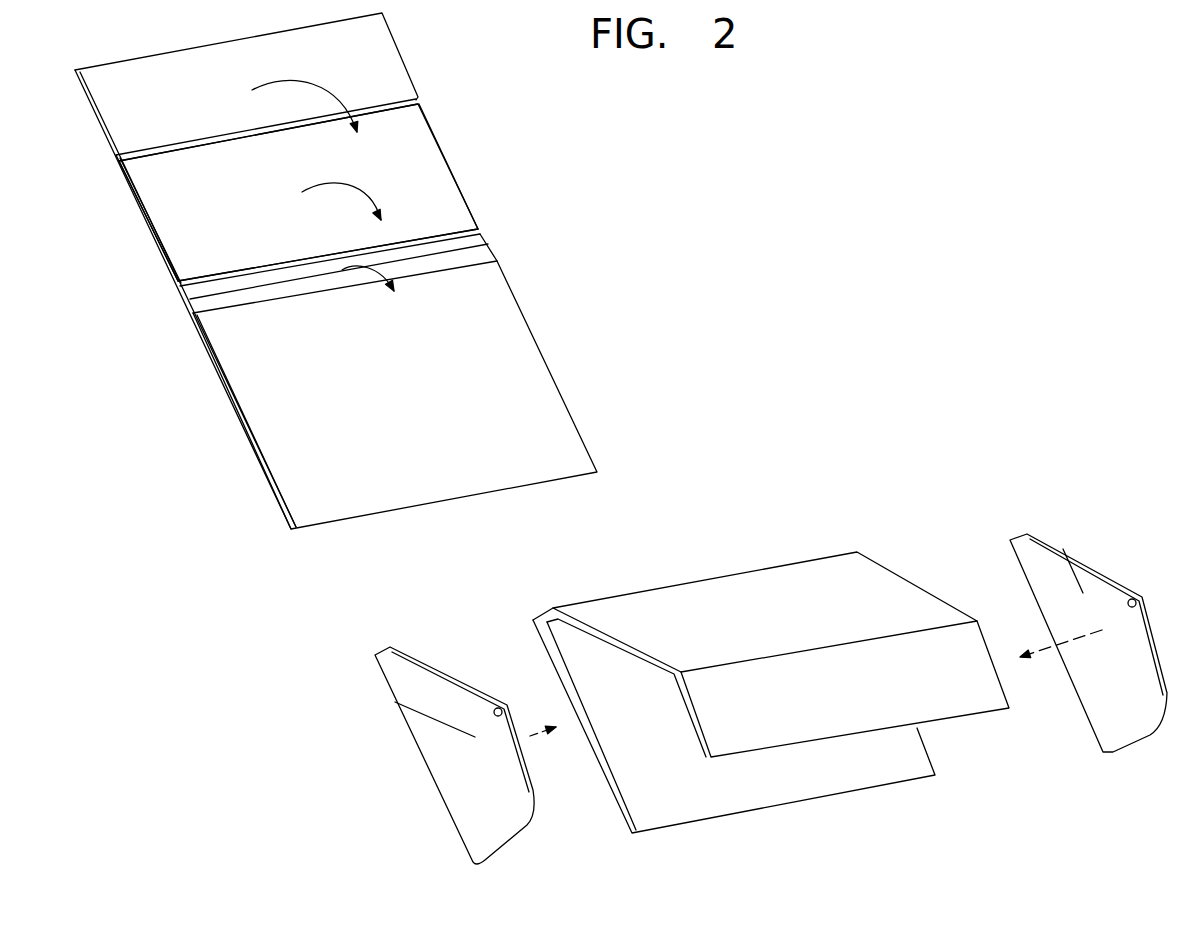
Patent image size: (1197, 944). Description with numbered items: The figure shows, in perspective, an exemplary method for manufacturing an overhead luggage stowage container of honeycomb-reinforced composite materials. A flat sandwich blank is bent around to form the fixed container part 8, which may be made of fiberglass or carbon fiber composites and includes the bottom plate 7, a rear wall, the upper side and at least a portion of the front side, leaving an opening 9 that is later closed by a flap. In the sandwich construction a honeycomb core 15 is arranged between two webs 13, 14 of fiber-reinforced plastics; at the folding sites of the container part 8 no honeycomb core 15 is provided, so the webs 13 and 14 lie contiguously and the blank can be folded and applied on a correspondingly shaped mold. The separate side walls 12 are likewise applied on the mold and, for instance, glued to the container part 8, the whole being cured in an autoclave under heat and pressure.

The bottom plate 7 is at (530, 328).
The fixed container part 8 is at (743, 613).
The opening 9 is at (858, 763).
The side walls 12 is at (378, 692).
The web 13 is at (410, 192).
The web 14 is at (203, 352).
The honeycomb core 15 is at (145, 215).